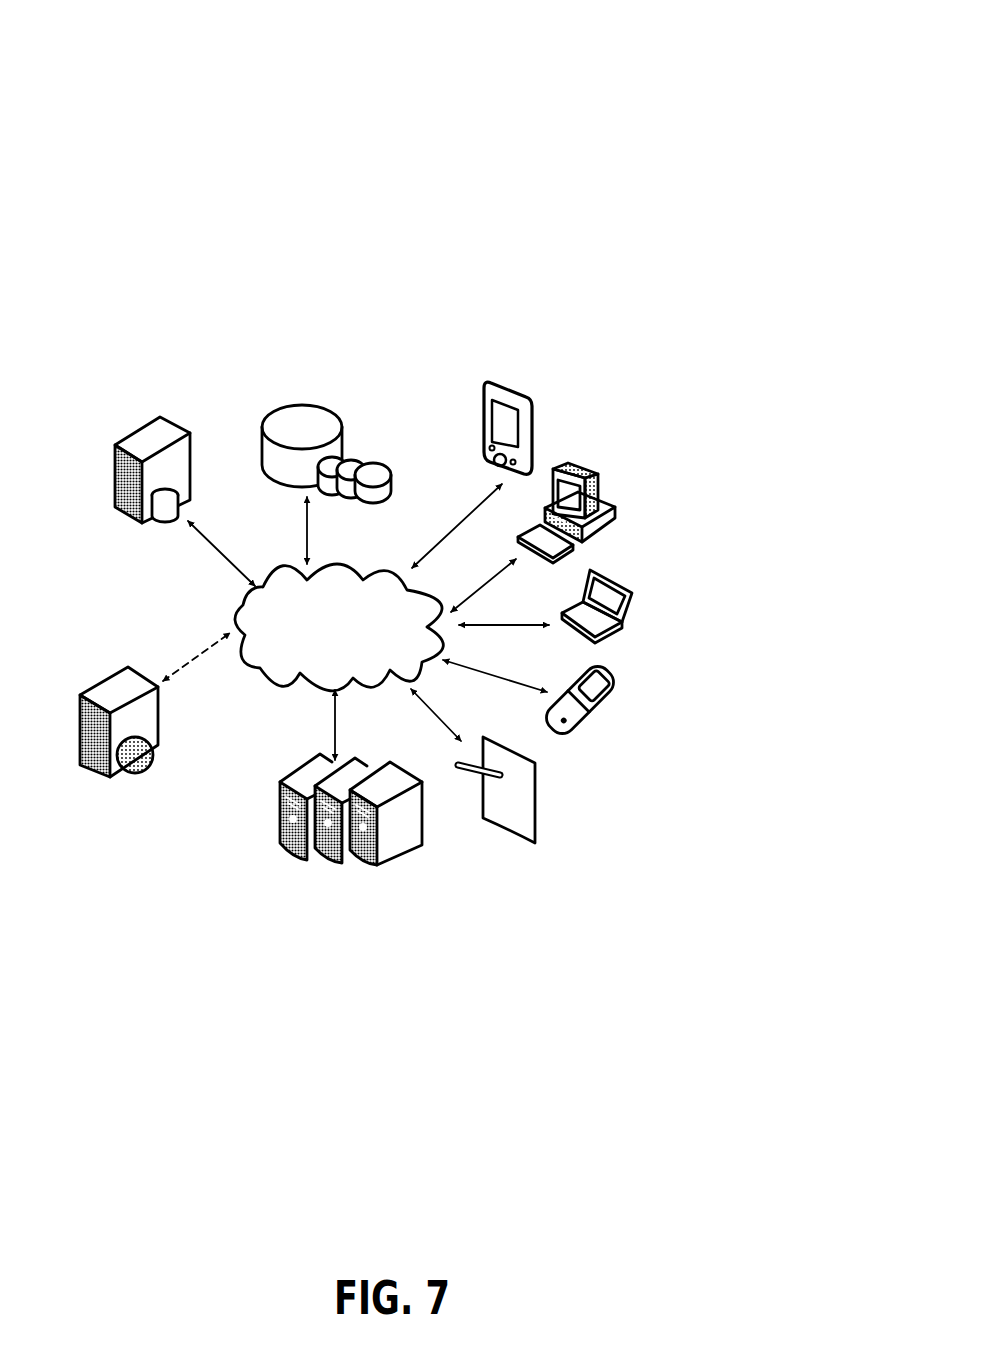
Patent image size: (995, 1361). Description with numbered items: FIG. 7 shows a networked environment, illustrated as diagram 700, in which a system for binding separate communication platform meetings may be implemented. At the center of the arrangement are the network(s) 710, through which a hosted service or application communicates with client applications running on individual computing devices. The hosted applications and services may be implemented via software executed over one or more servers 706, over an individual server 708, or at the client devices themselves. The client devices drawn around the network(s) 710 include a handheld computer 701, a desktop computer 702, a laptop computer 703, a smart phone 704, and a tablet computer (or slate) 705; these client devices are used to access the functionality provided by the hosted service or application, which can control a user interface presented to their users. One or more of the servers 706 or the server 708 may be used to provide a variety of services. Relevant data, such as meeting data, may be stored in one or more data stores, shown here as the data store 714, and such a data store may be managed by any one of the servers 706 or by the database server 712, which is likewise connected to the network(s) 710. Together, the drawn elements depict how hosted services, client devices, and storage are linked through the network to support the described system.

The diagram 700 is at (658, 20).
The handheld computer 701 is at (536, 384).
The desktop computer 702 is at (615, 469).
The laptop computer 703 is at (634, 567).
The smart phone 704 is at (608, 672).
The tablet computer 705 is at (548, 774).
The servers 706 is at (300, 761).
The individual server 708 is at (100, 672).
The network(s) 710 is at (341, 559).
The database server 712 is at (162, 530).
The data store 714 is at (314, 382).